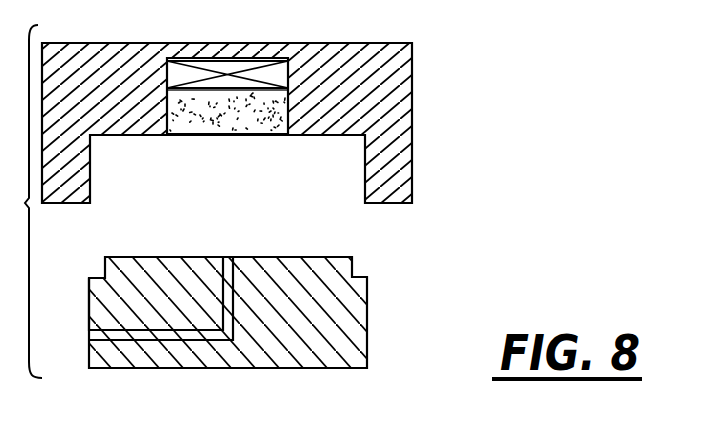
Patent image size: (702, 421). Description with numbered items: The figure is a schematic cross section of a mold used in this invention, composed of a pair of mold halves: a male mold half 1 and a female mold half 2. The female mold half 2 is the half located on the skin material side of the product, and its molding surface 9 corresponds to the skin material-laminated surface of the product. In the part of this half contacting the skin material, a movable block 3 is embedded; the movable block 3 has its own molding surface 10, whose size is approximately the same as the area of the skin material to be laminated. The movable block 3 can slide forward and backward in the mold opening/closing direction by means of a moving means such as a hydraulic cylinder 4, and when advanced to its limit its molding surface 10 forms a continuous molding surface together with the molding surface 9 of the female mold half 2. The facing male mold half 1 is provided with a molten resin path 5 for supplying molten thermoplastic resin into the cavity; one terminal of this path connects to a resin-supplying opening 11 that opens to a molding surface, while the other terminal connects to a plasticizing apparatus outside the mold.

The male mold half 1 is at (335, 312).
The female mold half 2 is at (382, 97).
The movable block 3 is at (193, 95).
The hydraulic cylinder 4 is at (237, 65).
The molten resin path 5 is at (219, 306).
The molding surface of the female mold half 9 is at (137, 135).
The molding surface of the movable block 10 is at (250, 135).
The resin-supplying opening 11 is at (228, 255).